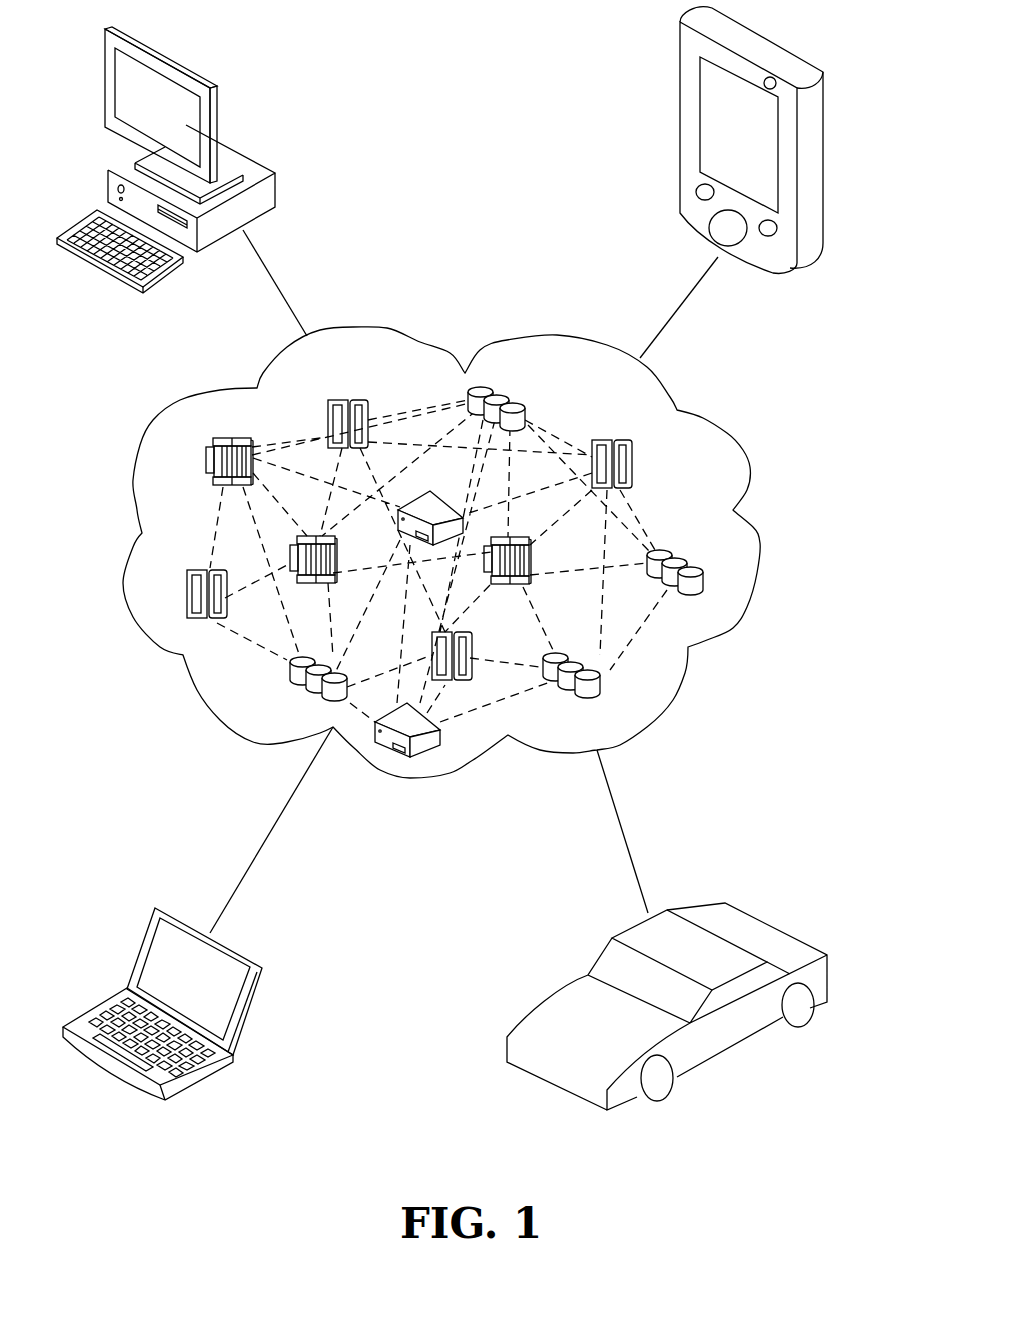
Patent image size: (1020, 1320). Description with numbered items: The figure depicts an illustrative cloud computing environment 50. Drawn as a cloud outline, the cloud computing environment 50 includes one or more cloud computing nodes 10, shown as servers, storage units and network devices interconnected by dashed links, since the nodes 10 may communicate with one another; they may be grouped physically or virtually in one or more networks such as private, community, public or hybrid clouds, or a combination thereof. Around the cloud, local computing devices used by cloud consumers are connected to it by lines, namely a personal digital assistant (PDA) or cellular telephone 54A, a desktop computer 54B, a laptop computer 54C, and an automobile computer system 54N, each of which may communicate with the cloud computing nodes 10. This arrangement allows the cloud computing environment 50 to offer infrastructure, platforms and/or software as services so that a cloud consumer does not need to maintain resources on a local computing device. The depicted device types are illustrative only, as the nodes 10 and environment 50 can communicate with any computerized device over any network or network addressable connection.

The cloud computing nodes 10 is at (680, 487).
The cloud computing environment 50 is at (746, 641).
The personal digital assistant (PDA) or cellular telephone 54A is at (678, 83).
The desktop computer 54B is at (277, 187).
The laptop computer 54C is at (260, 977).
The automobile computer system 54N is at (828, 973).